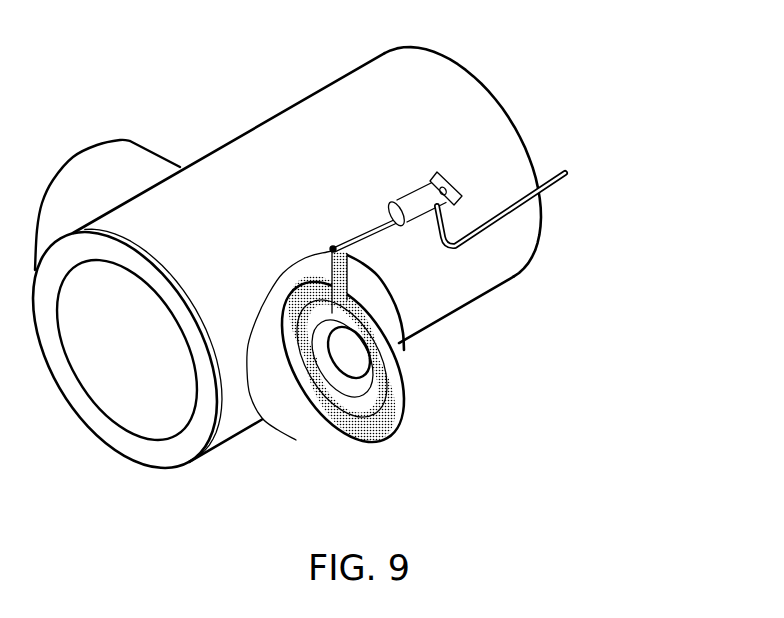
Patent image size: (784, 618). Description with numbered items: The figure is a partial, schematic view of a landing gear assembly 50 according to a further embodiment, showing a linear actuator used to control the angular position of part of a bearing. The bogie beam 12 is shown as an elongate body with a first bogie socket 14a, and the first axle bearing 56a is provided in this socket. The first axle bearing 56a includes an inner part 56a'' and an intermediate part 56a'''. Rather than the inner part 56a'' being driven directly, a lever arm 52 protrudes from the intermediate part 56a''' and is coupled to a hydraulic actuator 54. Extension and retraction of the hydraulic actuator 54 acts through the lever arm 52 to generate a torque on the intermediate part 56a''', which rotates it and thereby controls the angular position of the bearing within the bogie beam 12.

The landing gear assembly 50 is at (358, 264).
The bogie beam 12 is at (498, 265).
The first bogie socket 14a is at (394, 374).
The lever arm 52 is at (353, 275).
The hydraulic actuator 54 is at (413, 207).
The first axle bearing 56a is at (383, 385).
The inner part of the first axle bearing 56a'' is at (314, 401).
The intermediate part of the first axle bearing 56a''' is at (354, 386).